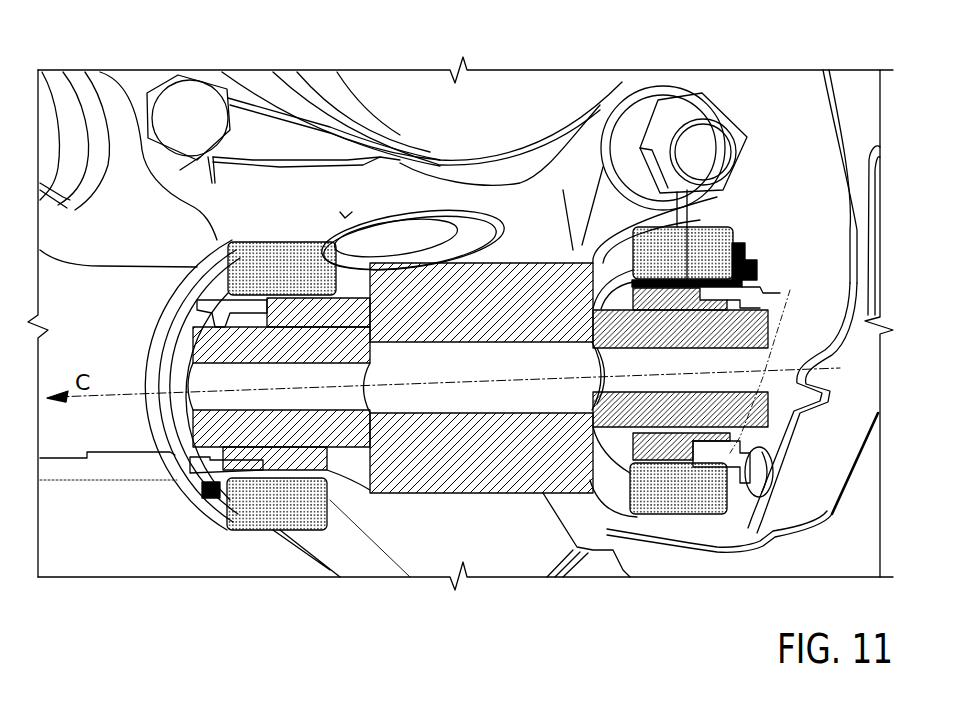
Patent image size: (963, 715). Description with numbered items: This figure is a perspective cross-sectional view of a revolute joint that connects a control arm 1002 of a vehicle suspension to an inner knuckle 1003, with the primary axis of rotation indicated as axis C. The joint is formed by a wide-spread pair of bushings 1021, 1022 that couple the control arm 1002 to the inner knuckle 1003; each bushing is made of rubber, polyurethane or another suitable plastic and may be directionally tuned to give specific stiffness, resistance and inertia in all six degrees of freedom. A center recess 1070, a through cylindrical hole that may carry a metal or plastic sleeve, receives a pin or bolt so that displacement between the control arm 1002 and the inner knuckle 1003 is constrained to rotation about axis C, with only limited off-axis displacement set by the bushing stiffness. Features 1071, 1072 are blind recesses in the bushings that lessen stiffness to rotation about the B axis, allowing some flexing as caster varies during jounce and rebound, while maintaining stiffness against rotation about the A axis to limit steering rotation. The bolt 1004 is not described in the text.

The control arm 1002 is at (262, 508).
The inner knuckle 1003 is at (460, 250).
The bolt 1004 is at (248, 208).
The bushing 1021 is at (288, 327).
The bushing 1022 is at (683, 195).
The center recess 1070 is at (568, 345).
The feature 1071 is at (230, 298).
The feature 1072 is at (765, 292).